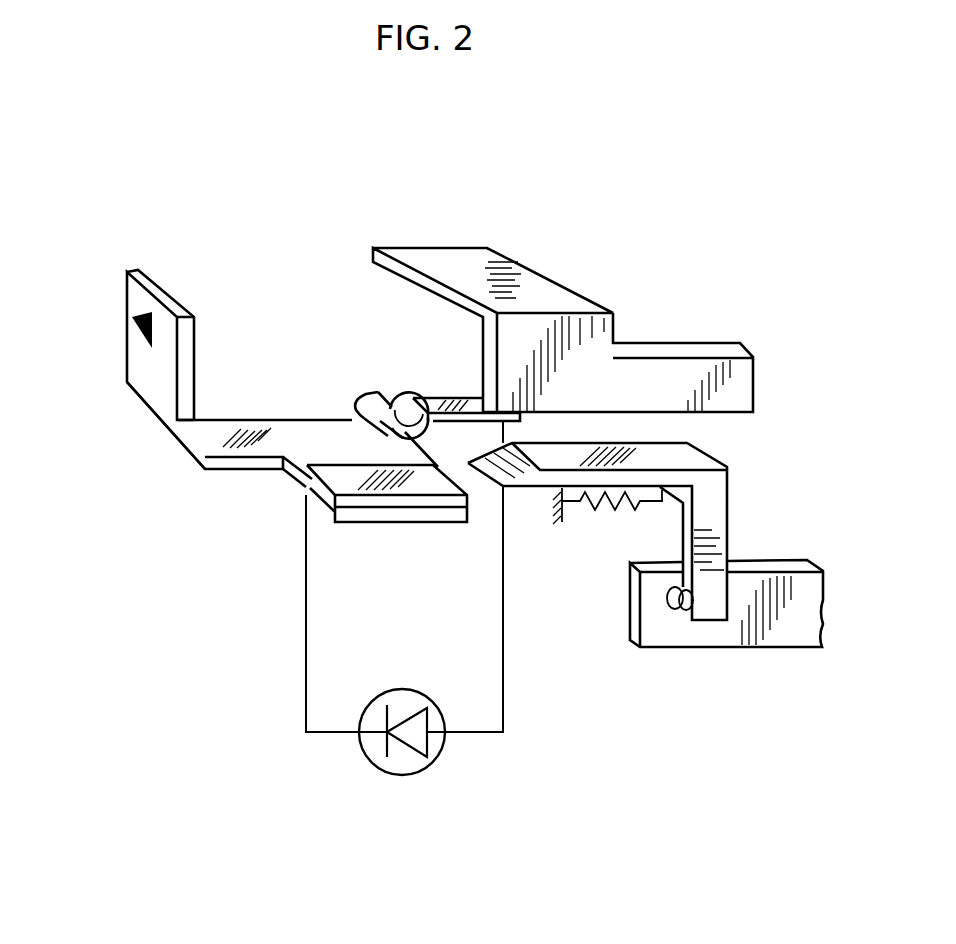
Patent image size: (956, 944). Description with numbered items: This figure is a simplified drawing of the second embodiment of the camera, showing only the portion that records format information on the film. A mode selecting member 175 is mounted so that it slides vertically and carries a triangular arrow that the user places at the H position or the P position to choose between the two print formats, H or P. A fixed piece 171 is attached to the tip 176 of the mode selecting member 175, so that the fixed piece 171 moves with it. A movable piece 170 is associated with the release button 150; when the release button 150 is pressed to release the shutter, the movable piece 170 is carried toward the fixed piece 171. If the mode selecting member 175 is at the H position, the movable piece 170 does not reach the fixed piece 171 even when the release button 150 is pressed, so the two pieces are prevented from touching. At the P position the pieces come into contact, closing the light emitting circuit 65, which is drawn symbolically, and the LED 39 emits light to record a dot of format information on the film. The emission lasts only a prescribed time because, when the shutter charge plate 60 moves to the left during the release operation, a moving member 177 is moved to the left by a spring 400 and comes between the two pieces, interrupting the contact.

The mode selecting member 175 is at (164, 288).
The P position P is at (122, 312).
The H position H is at (113, 422).
The release button 150 is at (513, 289).
The movable piece 170 is at (447, 398).
The tip of mode selecting member 176 is at (290, 477).
The fixed piece 171 is at (433, 480).
The moving member 177 is at (712, 502).
The spring 400 is at (608, 508).
The shutter charge plate 60 is at (785, 620).
The light emitting circuit 65 is at (514, 578).
The LED 39 is at (405, 777).